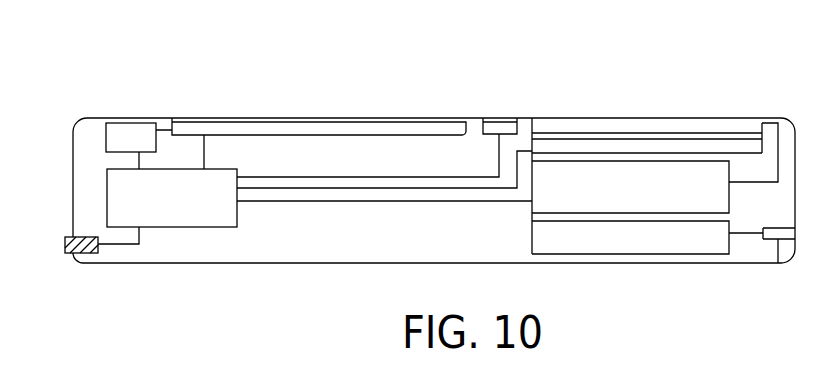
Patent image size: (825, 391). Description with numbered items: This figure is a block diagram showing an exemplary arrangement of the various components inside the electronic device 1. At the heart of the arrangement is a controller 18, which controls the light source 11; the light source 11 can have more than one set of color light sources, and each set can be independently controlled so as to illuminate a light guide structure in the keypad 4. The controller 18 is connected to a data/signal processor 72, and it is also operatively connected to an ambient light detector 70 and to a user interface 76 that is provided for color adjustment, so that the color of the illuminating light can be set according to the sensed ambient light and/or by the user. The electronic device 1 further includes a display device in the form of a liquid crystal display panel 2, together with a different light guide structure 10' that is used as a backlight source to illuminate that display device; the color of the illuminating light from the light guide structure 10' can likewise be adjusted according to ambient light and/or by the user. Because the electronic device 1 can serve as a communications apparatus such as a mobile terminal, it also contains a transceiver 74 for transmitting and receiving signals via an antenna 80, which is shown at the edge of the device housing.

The electronic device 1 is at (598, 37).
The liquid crystal display panel 2 is at (622, 118).
The keypad 4 is at (335, 118).
The light guide structure 10' is at (655, 134).
The light source 11 is at (139, 123).
The controller 18 is at (210, 228).
The ambient light detector 70 is at (500, 118).
The data/signal processor 72 is at (729, 186).
The transceiver 74 is at (530, 245).
The user interface 76 is at (65, 240).
The antenna 80 is at (778, 254).